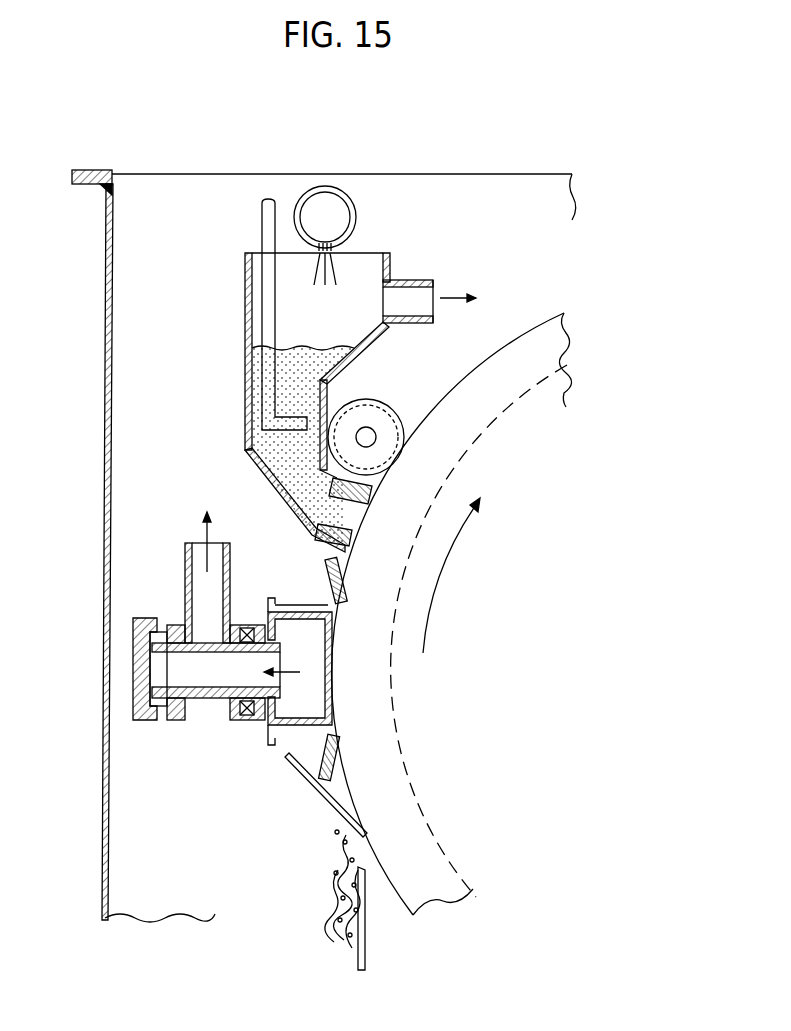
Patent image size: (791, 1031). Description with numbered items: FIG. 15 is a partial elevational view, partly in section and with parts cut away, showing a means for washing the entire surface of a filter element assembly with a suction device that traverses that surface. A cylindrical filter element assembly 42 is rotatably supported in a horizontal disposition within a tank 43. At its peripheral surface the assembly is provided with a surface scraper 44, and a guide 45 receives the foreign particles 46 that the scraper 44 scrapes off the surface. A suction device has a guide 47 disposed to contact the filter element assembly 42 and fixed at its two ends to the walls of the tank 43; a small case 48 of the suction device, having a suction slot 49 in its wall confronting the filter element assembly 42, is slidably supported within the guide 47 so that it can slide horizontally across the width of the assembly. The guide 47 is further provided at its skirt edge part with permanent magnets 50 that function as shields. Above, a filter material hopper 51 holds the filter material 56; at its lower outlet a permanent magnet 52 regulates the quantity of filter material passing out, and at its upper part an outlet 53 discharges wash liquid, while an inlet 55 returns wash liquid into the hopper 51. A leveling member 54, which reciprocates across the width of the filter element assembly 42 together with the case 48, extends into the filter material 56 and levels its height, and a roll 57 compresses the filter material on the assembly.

The cylindrical filter element assembly 42 is at (547, 325).
The tank 43 is at (105, 261).
The surface scraper 44 is at (305, 776).
The guide 45 is at (364, 931).
The foreign particles 46 is at (333, 833).
The guide 47 is at (268, 735).
The small case 48 is at (290, 705).
The suction slot 49 is at (324, 664).
The permanent magnets 50 is at (322, 580).
The filter material hopper 51 is at (245, 392).
The permanent magnet 52 is at (352, 498).
The outlet 53 is at (415, 280).
The leveling member 54 is at (262, 218).
The inlet 55 is at (324, 200).
The filter material 56 is at (301, 346).
The roll 57 is at (394, 404).